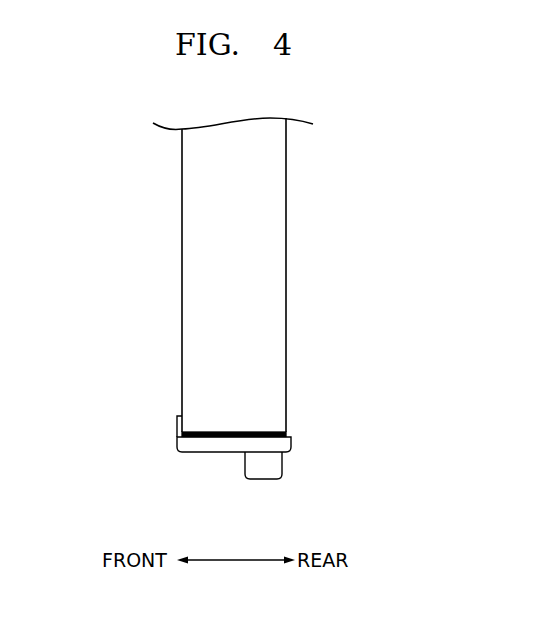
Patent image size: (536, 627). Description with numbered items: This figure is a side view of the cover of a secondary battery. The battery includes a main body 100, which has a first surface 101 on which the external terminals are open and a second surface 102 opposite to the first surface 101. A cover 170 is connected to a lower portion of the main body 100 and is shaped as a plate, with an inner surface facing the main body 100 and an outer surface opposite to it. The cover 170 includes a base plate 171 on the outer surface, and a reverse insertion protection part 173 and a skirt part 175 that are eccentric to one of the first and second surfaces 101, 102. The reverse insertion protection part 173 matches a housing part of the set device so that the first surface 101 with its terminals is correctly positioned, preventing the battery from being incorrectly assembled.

The main body 100 is at (262, 228).
The first surface 101 is at (181, 308).
The second surface 102 is at (286, 305).
The cover 170 is at (259, 464).
The base plate 171 is at (213, 452).
The reverse insertion protection part 173 is at (277, 468).
The skirt part 175 is at (177, 422).